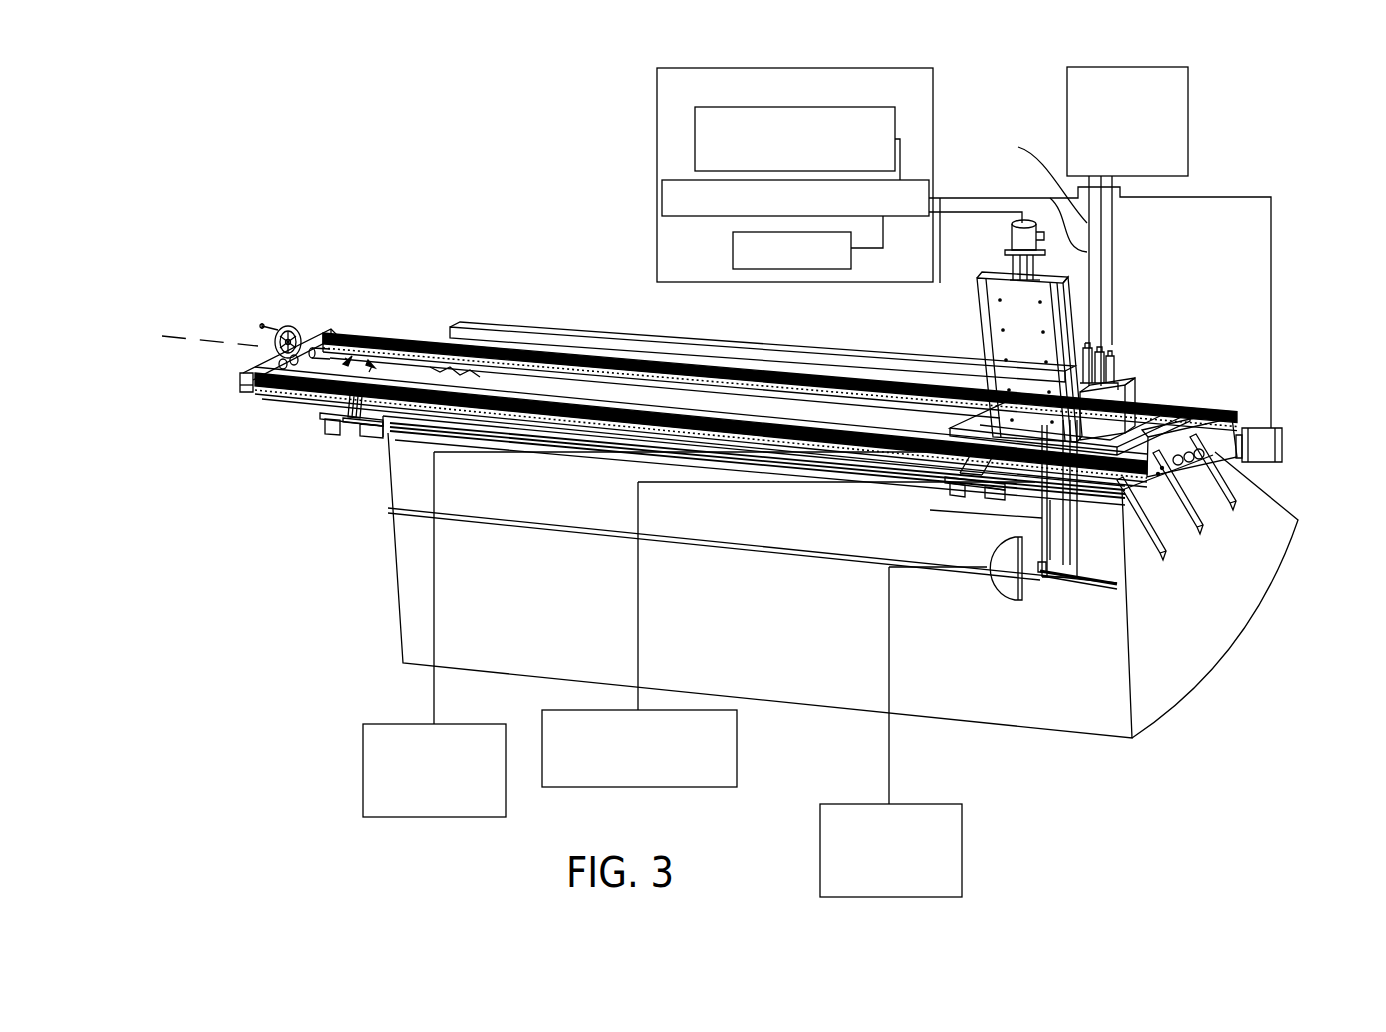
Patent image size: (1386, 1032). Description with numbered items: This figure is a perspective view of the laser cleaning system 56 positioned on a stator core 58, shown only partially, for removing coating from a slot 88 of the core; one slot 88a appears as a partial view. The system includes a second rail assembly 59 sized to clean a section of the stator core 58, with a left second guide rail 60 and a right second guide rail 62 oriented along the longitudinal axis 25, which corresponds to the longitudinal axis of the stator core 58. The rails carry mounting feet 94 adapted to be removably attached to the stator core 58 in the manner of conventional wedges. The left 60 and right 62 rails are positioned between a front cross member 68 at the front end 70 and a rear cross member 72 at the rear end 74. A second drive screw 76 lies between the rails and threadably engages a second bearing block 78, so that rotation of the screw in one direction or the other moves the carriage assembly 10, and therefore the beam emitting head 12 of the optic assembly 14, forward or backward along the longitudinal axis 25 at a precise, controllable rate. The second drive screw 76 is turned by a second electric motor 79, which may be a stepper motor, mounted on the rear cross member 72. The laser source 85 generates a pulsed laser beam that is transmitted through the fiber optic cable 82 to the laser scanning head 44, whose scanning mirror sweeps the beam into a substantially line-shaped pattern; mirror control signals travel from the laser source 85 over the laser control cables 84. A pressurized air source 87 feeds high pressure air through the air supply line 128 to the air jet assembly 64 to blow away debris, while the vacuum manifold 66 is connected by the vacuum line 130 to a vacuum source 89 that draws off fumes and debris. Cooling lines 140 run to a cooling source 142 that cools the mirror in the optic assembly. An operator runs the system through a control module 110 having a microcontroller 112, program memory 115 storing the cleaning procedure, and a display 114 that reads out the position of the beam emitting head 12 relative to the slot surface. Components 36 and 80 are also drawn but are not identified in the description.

The carriage assembly 10 is at (975, 325).
The beam emitting head 12 is at (1063, 596).
The optic assembly 14 is at (1084, 514).
The longitudinal axis 25 is at (173, 335).
The motor 36 is at (1010, 243).
The laser scanning head 44 is at (1122, 390).
The laser cleaning system 56 is at (602, 327).
The stator core 58 is at (1162, 697).
The second rail assembly 59 is at (505, 332).
The left second guide rail 60 is at (274, 392).
The right second guide rail 62 is at (388, 330).
The air jet assembly 64 is at (1040, 579).
The vacuum manifold 66 is at (990, 598).
The front cross member 68 is at (240, 381).
The front end 70 is at (316, 321).
The rear cross member 72 is at (1215, 426).
The rear end 74 is at (1285, 380).
The second drive screw 76 is at (325, 401).
The second bearing block 78 is at (1177, 432).
The second electric motor 79 is at (1284, 456).
The hand wheel 80 is at (266, 326).
The fiber optic cable 82 is at (1112, 232).
The laser control cables 84 is at (1036, 189).
The laser source 85 is at (1188, 118).
The pressurized air source 87 is at (702, 787).
The slot 88 is at (1165, 527).
The slot 88a is at (1113, 574).
The vacuum source 89 is at (962, 852).
The mounting feet 94 is at (431, 365).
The control module 110 is at (657, 86).
The microcontroller 112 is at (662, 200).
The display 114 is at (733, 262).
The program memory 115 is at (695, 133).
The air supply line 128 is at (638, 605).
The vacuum line 130 is at (890, 760).
The cooling lines 140 is at (434, 631).
The cooling source 142 is at (363, 796).